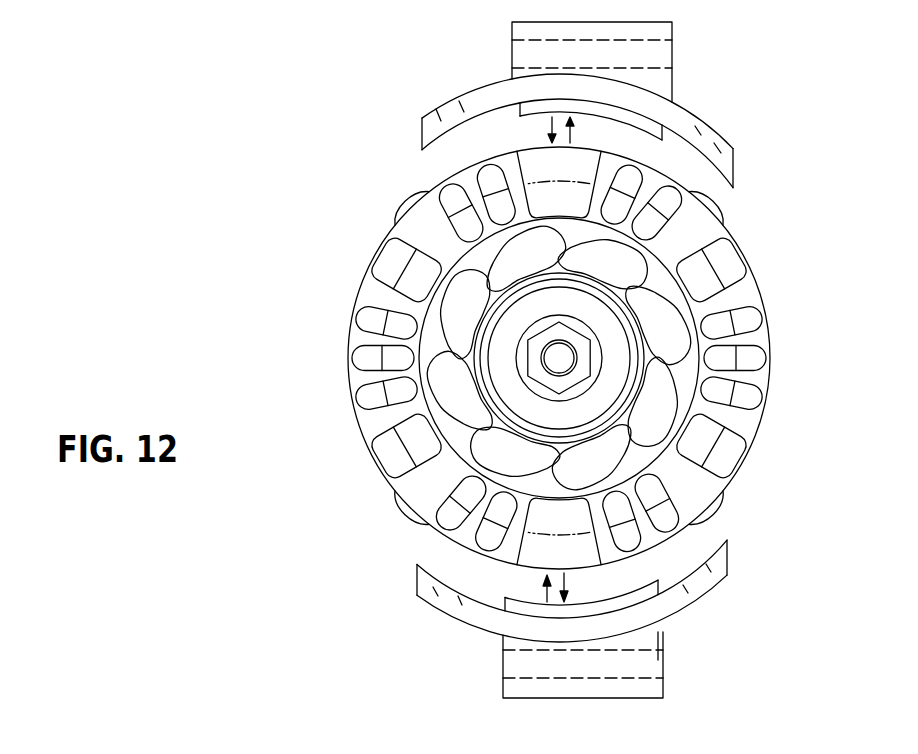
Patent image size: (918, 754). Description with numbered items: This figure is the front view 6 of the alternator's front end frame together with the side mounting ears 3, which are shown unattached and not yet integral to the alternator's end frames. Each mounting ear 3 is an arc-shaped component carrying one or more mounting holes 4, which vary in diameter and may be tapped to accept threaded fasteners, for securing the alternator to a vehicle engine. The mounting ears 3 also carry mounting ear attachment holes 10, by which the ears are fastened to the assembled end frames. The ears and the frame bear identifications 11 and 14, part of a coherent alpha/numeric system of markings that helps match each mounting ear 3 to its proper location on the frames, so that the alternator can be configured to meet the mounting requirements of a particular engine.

The mounting ear 3 is at (513, 92).
The mounting hole 4 is at (672, 57).
The front view 6 is at (350, 476).
The mounting ear attachment hole 10 is at (447, 107).
The identification 11 is at (440, 113).
The identification 14 is at (648, 452).